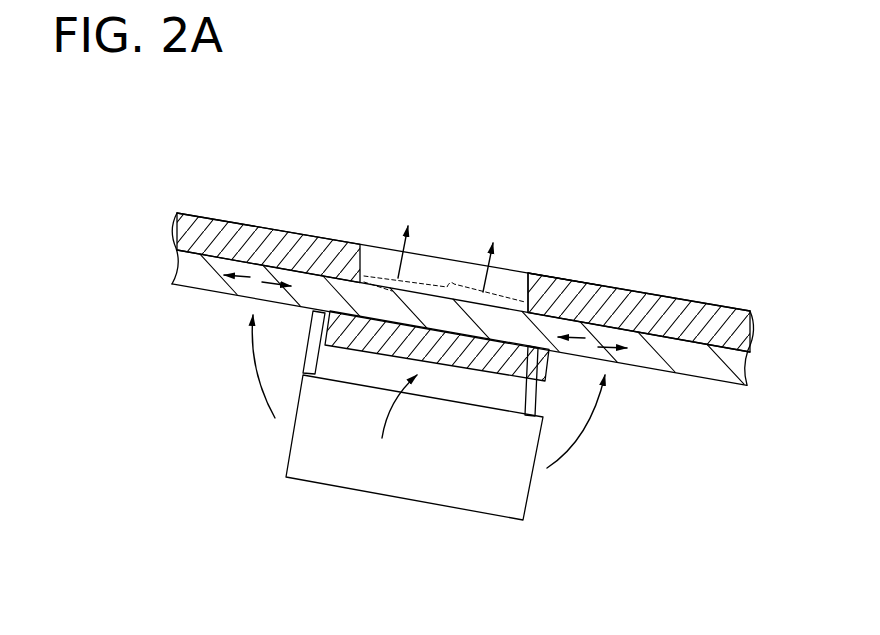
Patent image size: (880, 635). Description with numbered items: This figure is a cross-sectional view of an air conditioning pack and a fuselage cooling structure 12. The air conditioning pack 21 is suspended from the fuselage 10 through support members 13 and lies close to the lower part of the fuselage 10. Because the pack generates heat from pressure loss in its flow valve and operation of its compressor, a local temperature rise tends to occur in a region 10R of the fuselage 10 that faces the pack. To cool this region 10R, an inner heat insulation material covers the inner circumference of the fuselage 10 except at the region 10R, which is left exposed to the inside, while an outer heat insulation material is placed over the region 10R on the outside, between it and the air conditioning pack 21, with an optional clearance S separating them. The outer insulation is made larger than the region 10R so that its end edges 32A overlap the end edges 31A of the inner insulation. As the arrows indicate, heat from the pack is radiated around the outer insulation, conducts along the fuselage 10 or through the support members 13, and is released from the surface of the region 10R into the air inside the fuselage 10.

The display device 12 is at (466, 151).
The fuselage 10 is at (222, 219).
The region 10R is at (444, 263).
The end edges of the inner heat insulation material 31A is at (536, 278).
The end edges of the outer heat insulation material 32A is at (567, 282).
The support members 13 is at (328, 362).
The air conditioning pack 21 is at (288, 449).
The clearance S is at (383, 440).